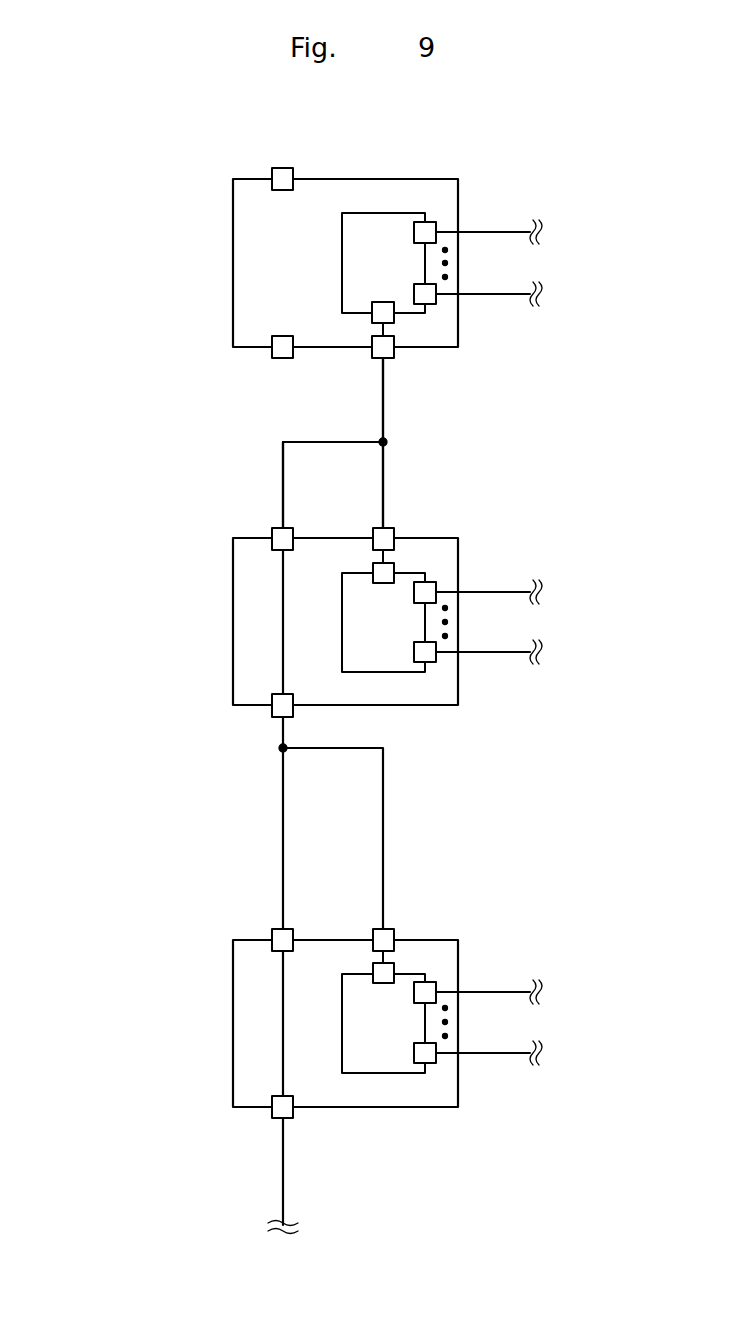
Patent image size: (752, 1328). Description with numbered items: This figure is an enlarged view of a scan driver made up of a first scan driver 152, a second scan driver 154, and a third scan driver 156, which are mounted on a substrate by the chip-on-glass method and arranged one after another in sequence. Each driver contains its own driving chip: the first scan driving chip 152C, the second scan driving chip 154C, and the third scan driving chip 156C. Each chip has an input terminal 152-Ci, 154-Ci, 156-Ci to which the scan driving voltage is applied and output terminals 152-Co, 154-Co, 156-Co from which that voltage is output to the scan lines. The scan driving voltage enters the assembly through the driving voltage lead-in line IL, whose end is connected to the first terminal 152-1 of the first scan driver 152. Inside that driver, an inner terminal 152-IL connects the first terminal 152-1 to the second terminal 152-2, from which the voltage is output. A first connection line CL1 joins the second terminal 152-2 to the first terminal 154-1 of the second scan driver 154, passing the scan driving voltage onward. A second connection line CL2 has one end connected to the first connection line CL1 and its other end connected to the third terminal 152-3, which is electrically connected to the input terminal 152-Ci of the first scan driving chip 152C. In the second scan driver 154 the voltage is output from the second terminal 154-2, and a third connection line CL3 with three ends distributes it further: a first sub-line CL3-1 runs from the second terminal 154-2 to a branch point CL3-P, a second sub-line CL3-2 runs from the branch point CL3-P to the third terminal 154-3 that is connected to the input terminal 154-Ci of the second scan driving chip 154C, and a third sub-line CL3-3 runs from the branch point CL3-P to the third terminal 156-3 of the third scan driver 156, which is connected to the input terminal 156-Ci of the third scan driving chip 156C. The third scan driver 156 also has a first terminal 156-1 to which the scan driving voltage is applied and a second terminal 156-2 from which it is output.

The third scan driver 156 is at (233, 260).
The first terminal 156-1 is at (283, 336).
The second terminal 156-2 is at (283, 191).
The third terminal 156-3 is at (396, 350).
The third scan driving chip 156C is at (418, 313).
The input terminal 156-Ci is at (396, 315).
The output terminals 156-Co is at (425, 222).
The third connection line CL3 is at (107, 398).
The first sub-line CL3-1 is at (283, 500).
The second sub-line CL3-2 is at (383, 465).
The third sub-line CL3-3 is at (383, 398).
The branch point CL3-P is at (386, 443).
The second scan driver 154 is at (233, 620).
The first terminal 154-1 is at (283, 719).
The second terminal 154-2 is at (276, 551).
The third terminal 154-3 is at (390, 528).
The second scan driving chip 154C is at (405, 674).
The input terminal 154-Ci is at (394, 568).
The output terminals 154-Co is at (422, 664).
The first connection line CL1 is at (283, 853).
The second connection line CL2 is at (383, 853).
The first scan driver 152 is at (233, 1062).
The first terminal 152-1 is at (281, 1099).
The second terminal 152-2 is at (276, 951).
The third terminal 152-3 is at (390, 928).
The inner terminal 152-IL is at (283, 1015).
The first scan driving chip 152C is at (405, 1075).
The input terminal 152-Ci is at (394, 968).
The output terminals 152-Co is at (422, 1064).
The driving voltage lead-in line IL is at (283, 1187).